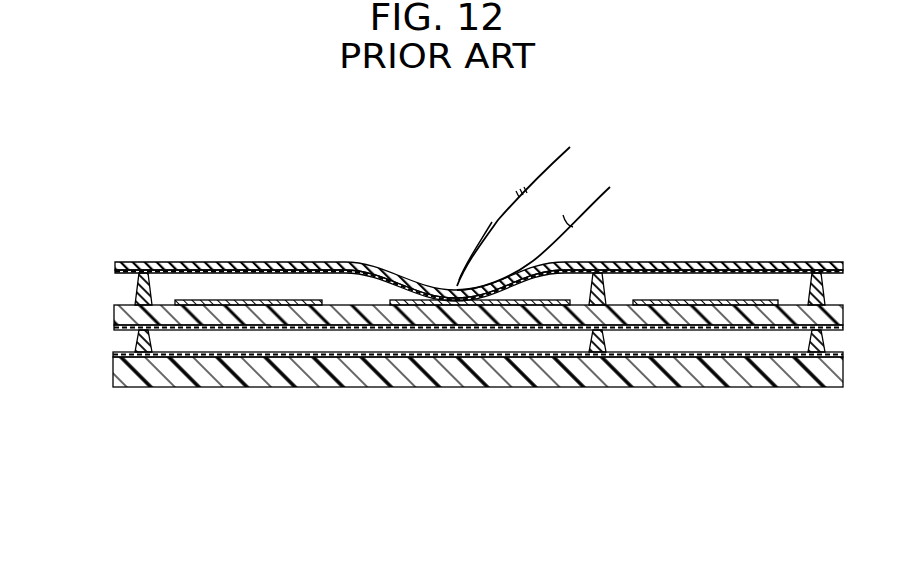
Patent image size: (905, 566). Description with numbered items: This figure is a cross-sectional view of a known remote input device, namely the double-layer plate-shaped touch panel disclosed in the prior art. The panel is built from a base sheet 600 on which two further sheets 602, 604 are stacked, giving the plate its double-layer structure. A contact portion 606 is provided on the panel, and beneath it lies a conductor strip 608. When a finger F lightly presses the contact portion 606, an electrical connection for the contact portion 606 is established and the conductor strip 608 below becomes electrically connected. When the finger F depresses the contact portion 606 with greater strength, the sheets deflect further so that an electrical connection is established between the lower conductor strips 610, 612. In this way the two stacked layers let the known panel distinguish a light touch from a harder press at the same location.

The sheet 600 is at (163, 375).
The sheet 602 is at (135, 318).
The sheet 604 is at (273, 262).
The contact portion 606 is at (430, 288).
The conductor strip 608 is at (259, 304).
The conductor strip 610 is at (117, 333).
The conductor strip 612 is at (117, 352).
The finger F is at (532, 182).